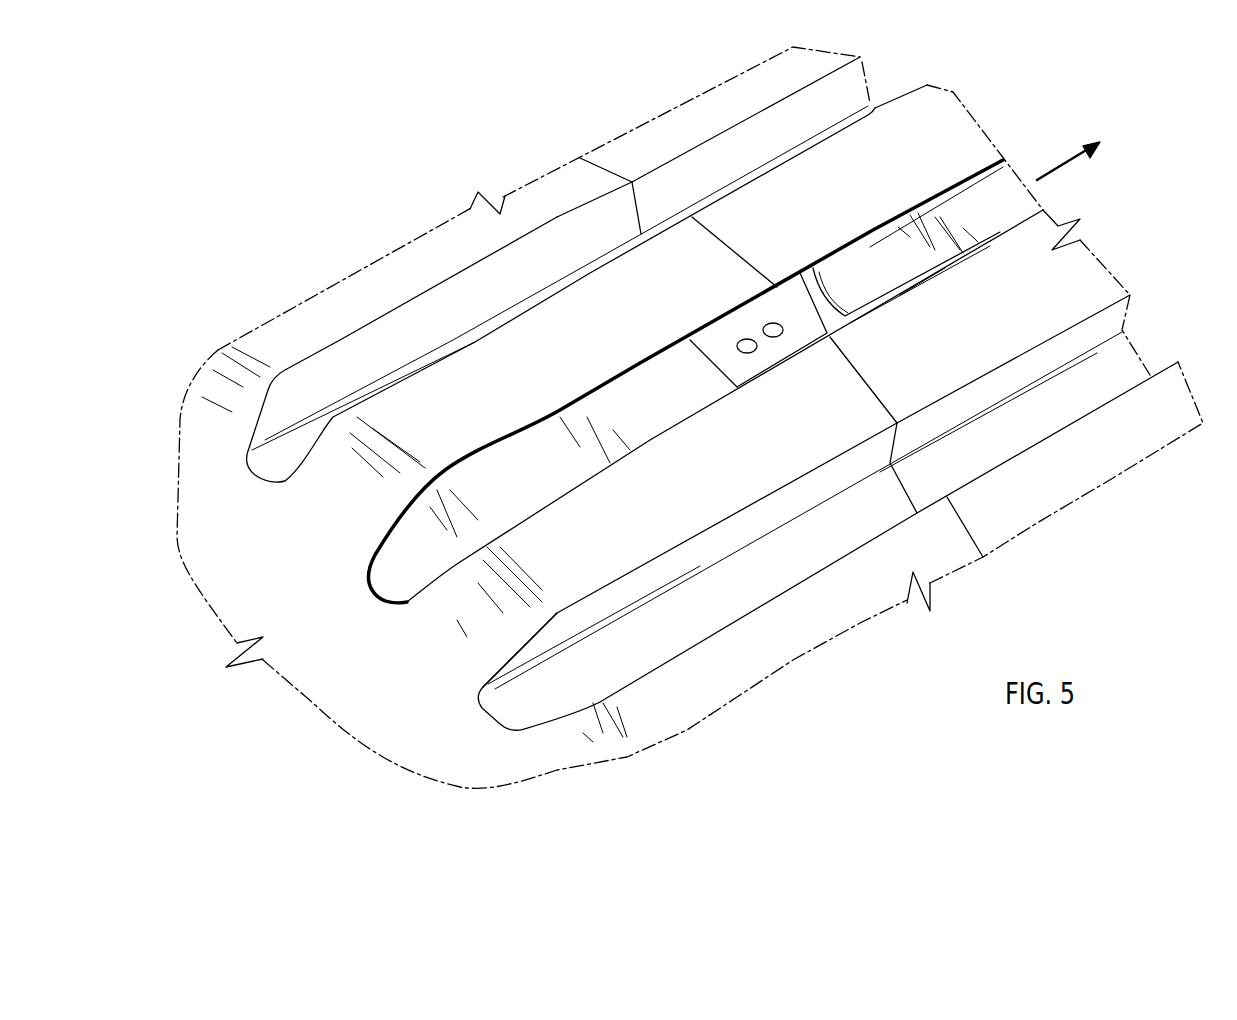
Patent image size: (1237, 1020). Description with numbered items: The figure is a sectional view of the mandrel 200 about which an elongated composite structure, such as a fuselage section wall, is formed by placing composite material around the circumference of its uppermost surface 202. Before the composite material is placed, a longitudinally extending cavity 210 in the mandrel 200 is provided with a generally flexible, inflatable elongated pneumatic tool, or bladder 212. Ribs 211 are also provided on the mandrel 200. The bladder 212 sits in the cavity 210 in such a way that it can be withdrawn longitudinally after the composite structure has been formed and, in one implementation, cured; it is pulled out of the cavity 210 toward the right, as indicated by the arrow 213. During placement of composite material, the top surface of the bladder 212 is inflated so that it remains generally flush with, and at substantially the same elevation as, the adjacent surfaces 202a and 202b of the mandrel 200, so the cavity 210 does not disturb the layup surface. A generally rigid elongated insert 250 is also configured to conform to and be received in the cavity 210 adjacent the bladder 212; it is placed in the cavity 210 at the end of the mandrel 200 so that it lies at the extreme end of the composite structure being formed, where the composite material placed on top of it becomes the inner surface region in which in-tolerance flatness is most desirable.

The mandrel 200 is at (386, 207).
The surface of mandrel 202 is at (1030, 483).
The surface of mandrel 202a is at (813, 212).
The surface of mandrel 202b is at (1073, 280).
The cavity 210 is at (873, 230).
The ribs 211 is at (612, 600).
The flexible elongated pneumatic tool (bladder) 212 is at (990, 193).
The arrow 213 is at (1060, 167).
The rigid elongated insert 250 is at (498, 470).